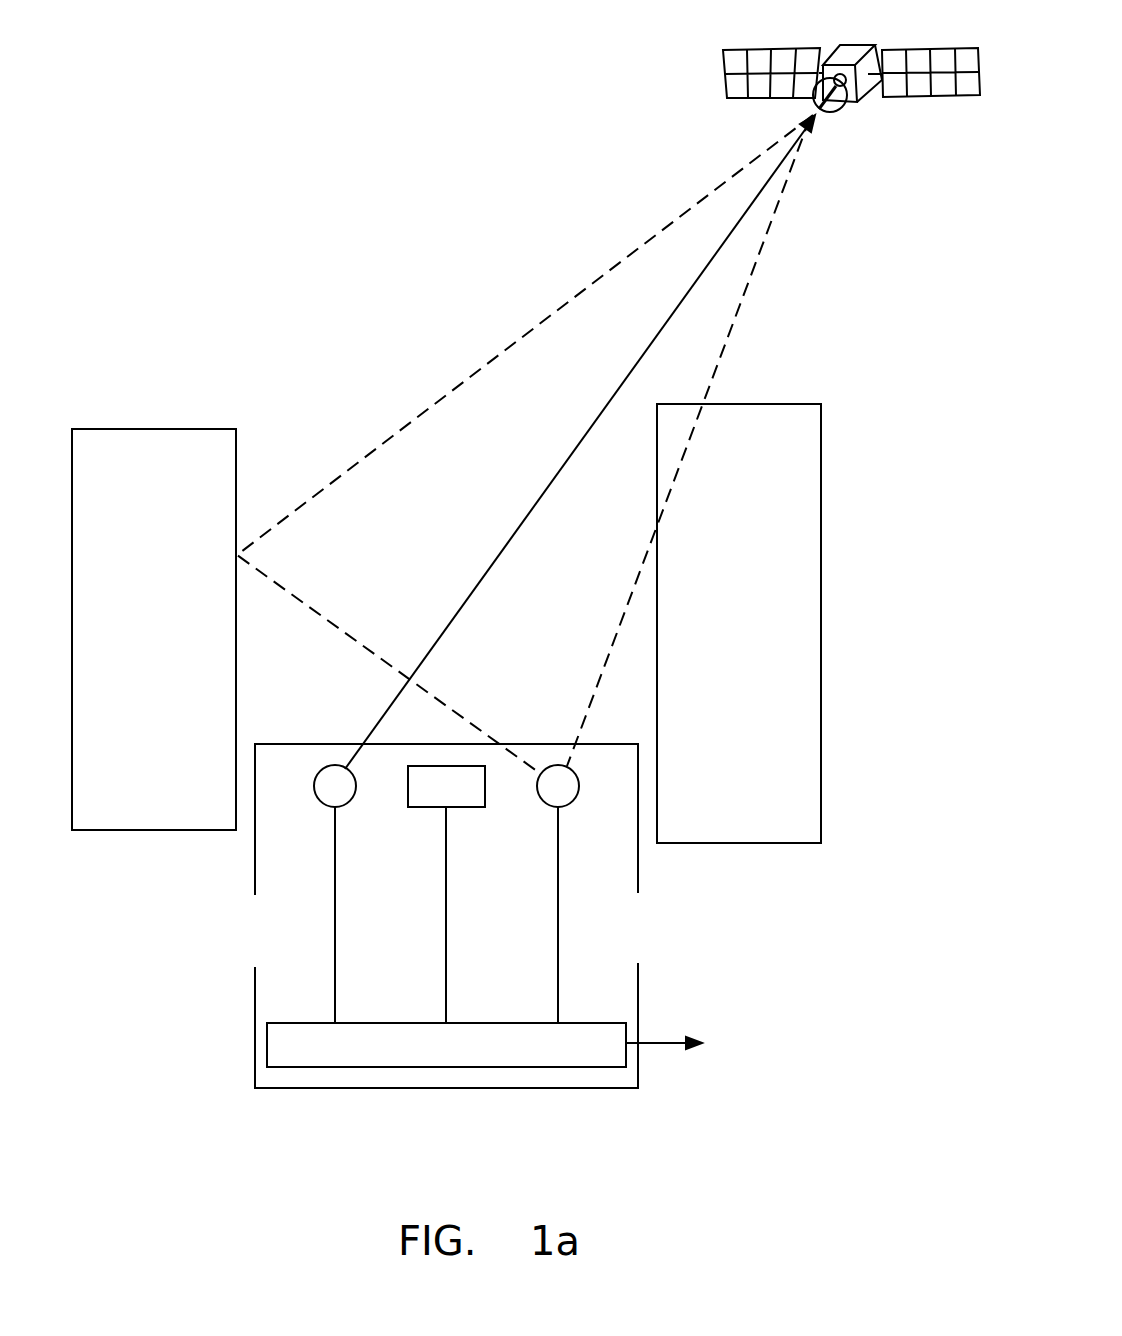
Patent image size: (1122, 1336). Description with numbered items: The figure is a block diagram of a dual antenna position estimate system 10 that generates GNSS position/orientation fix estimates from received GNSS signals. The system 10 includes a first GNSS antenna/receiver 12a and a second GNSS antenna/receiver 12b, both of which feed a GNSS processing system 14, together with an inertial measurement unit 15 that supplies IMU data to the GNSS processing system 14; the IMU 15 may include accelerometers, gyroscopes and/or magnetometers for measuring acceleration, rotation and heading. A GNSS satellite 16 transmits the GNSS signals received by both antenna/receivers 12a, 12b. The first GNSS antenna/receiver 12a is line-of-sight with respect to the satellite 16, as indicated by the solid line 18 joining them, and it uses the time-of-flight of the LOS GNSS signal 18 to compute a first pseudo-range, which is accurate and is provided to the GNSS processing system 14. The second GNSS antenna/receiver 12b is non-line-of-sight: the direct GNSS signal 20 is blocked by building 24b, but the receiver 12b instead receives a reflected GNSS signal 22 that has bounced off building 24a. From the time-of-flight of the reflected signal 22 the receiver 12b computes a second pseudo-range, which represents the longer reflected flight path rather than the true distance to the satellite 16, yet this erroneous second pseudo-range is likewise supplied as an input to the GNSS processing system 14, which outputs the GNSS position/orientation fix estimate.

The dual antenna position estimate system 10 is at (533, 745).
The first GNSS antenna/receiver 12a is at (325, 805).
The second GNSS antenna/receiver 12b is at (570, 805).
The GNSS processing system 14 is at (505, 1067).
The inertial measurement unit (IMU) 15 is at (420, 807).
The GNSS satellite 16 is at (847, 53).
The LOS GNSS signal 18 is at (528, 515).
The GNSS signal 20 is at (782, 203).
The reflected GNSS signal 22 is at (665, 228).
The building 24a is at (120, 429).
The building 24b is at (770, 404).